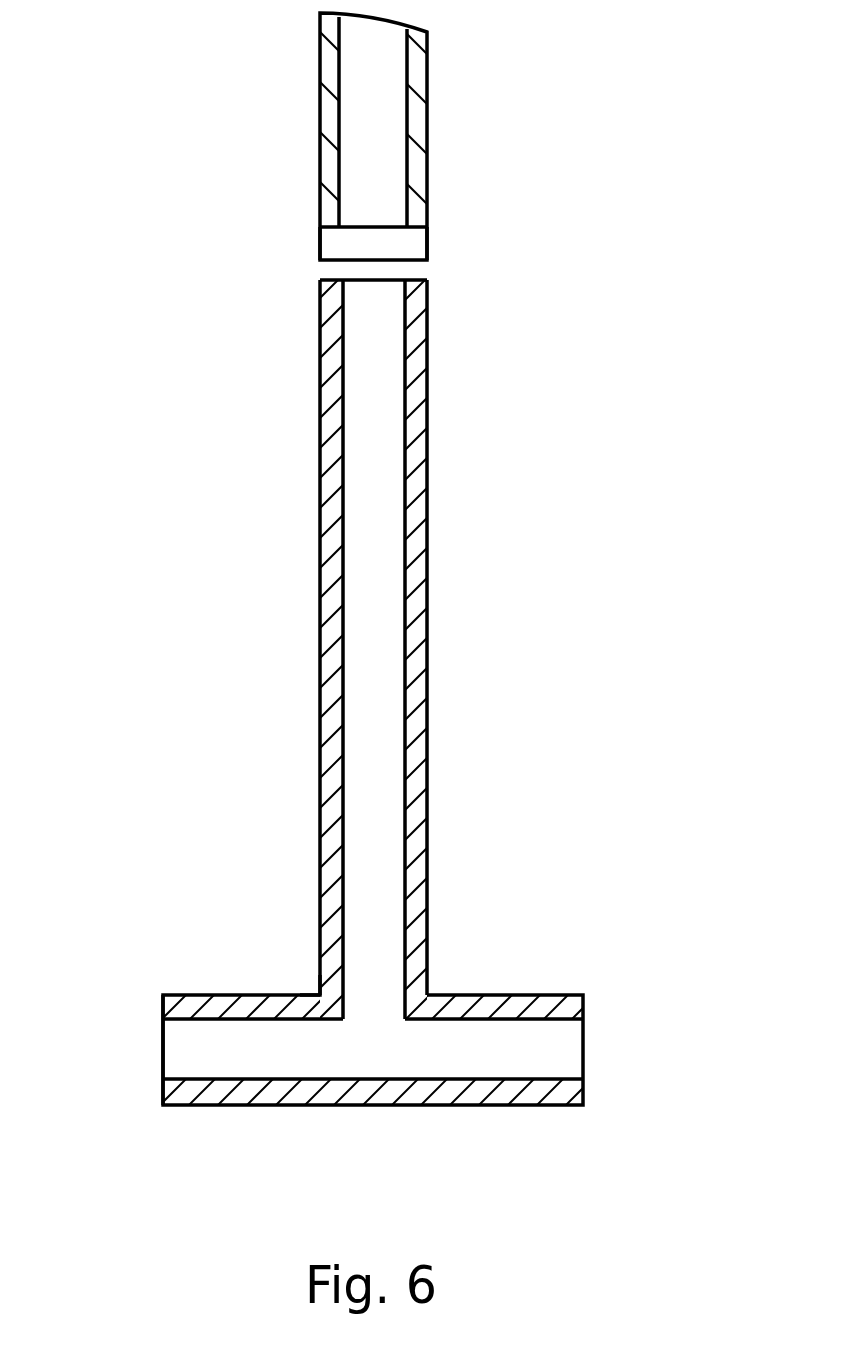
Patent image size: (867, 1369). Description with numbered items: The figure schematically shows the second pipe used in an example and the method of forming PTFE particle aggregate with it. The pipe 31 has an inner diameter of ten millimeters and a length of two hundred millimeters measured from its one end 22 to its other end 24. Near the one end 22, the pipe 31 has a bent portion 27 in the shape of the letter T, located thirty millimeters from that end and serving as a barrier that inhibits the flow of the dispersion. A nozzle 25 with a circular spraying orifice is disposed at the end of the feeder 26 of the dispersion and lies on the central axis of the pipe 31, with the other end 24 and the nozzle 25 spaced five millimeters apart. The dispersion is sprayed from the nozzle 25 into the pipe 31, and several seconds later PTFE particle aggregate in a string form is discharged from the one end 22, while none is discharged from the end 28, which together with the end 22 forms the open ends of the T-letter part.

The one end 22 is at (583, 1053).
The other end 24 is at (383, 278).
The nozzle 25 is at (398, 240).
The feeder 26 is at (383, 110).
The bent portion 27 is at (310, 966).
The end 28 is at (163, 1052).
The pipe 31 is at (472, 499).